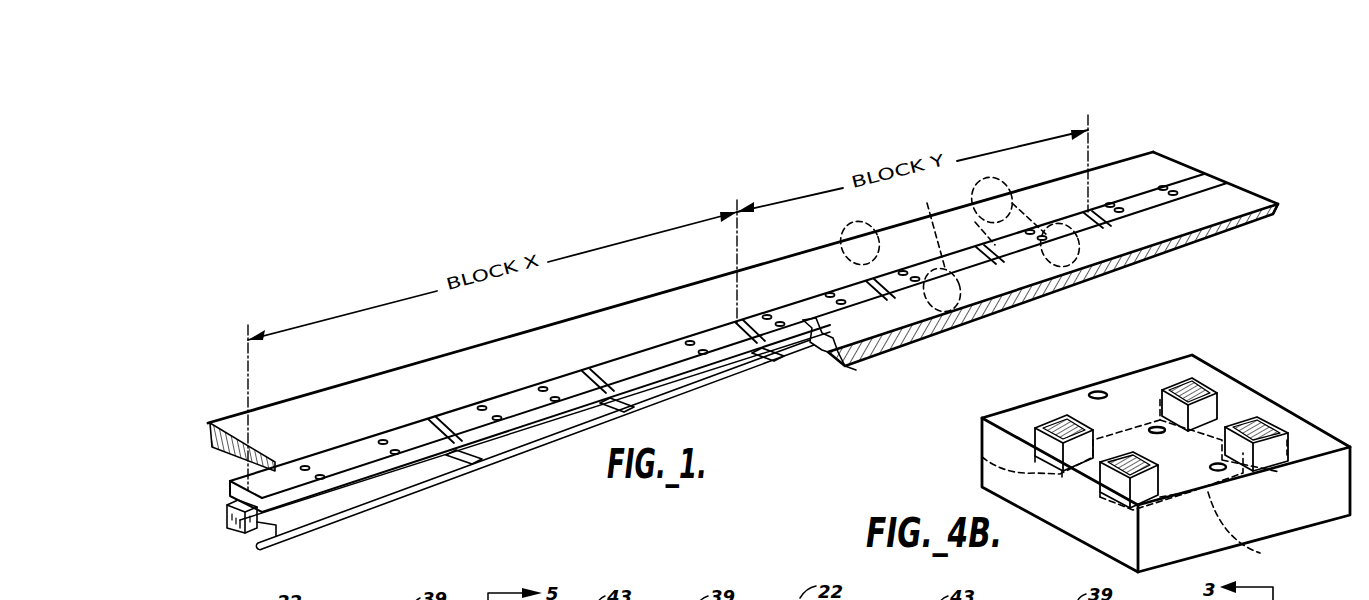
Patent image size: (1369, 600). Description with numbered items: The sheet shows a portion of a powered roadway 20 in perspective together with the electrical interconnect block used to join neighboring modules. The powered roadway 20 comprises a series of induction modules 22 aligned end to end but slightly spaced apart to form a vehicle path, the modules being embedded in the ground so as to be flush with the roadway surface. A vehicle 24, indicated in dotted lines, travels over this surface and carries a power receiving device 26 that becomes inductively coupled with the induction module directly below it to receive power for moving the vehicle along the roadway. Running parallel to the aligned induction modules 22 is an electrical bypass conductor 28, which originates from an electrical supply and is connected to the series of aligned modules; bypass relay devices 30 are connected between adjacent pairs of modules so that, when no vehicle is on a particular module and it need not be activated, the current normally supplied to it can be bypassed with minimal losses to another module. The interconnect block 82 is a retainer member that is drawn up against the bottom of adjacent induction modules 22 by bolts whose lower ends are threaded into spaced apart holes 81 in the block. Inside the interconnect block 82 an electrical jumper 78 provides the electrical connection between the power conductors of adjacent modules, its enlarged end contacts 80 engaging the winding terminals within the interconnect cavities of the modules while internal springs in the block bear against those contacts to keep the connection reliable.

In FIG. 1, the powered roadway 20 is at (1216, 169).
In FIG. 1, the induction modules 22 is at (434, 456).
In FIG. 1, the vehicle 24 is at (842, 232).
In FIG. 1, the power receiving device 26 is at (929, 204).
In FIG. 1, the electrical bypass conductor 28 is at (702, 389).
In FIG. 1, the bypass relay devices 30 is at (228, 532).
In FIG. 4B, the electrical jumper 78 is at (982, 457).
In FIG. 4B, the end contacts 80 is at (1200, 388).
In FIG. 4B, the holes 81 is at (1098, 390).
In FIG. 4B, the interconnect block 82 is at (1250, 408).